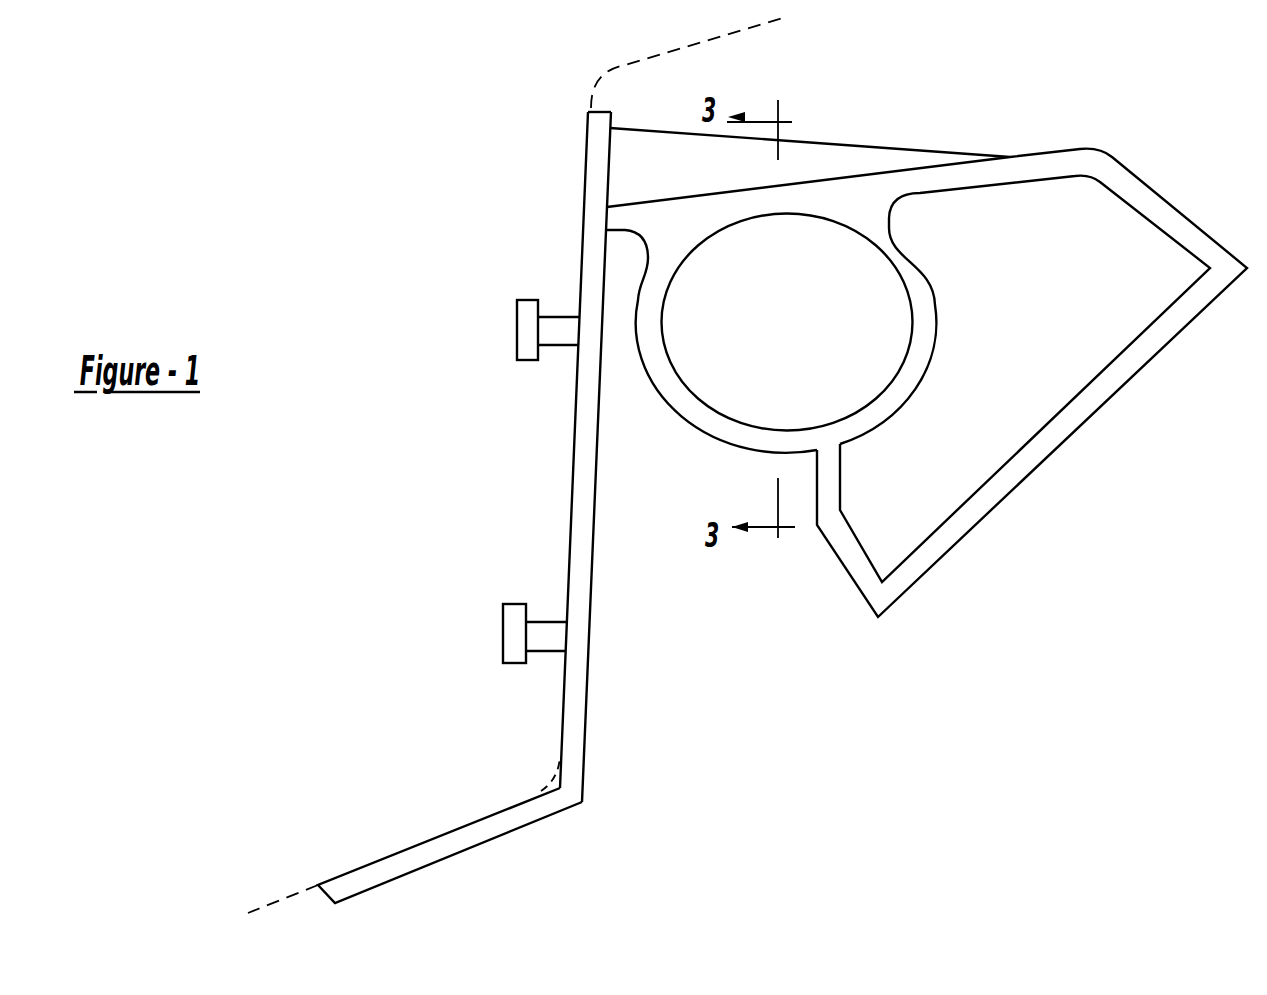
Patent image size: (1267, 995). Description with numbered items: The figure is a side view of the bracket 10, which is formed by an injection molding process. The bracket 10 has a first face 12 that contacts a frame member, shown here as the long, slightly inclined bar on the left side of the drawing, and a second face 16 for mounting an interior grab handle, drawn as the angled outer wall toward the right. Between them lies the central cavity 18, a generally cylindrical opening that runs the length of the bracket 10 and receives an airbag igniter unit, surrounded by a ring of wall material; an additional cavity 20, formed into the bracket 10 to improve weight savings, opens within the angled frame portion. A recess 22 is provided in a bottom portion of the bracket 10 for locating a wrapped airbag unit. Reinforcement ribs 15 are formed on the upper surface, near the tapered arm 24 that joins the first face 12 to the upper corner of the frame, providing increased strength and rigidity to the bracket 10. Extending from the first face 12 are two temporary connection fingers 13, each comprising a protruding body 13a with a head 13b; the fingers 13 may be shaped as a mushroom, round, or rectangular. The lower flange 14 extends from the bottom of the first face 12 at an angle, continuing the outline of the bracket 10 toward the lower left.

The bracket 10 is at (1017, 120).
The first face 12 is at (565, 492).
The temporary connection fingers 13 is at (505, 368).
The protruding body 13a is at (560, 328).
The head 13b is at (522, 320).
The lower flange 14 is at (443, 835).
The reinforcement ribs 15 is at (663, 170).
The second face 16 is at (1067, 442).
The central cavity 18 is at (715, 330).
The additional cavity 20 is at (1087, 298).
The recess 22 is at (755, 613).
The tapered arm 24 is at (853, 175).